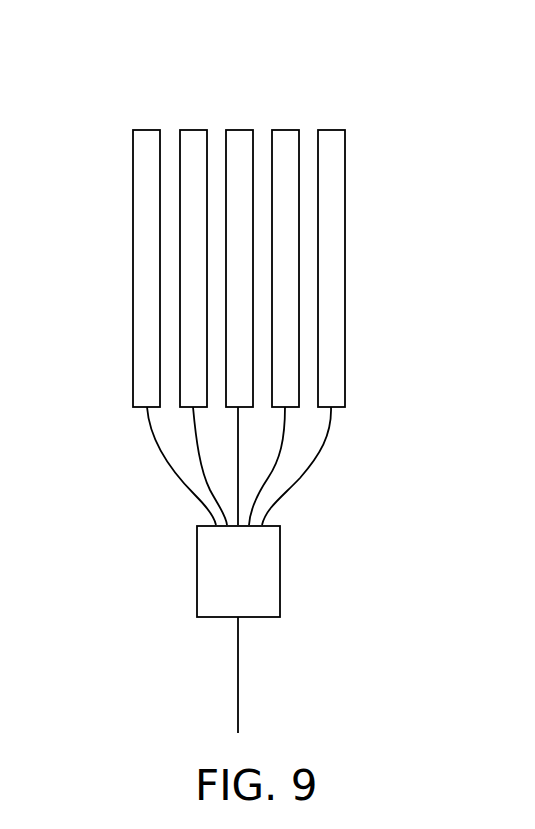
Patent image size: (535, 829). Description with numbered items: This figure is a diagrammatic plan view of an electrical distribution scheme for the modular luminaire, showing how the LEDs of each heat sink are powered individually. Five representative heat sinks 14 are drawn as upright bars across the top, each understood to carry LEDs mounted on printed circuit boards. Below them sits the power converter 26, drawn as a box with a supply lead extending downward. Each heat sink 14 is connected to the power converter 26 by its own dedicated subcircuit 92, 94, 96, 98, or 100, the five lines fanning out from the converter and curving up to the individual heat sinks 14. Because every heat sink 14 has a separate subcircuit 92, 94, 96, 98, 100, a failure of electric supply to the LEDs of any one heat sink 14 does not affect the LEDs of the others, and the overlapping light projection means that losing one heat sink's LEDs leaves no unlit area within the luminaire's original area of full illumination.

The heat sink 14 is at (142, 130).
The subcircuit 92 is at (150, 440).
The subcircuit 94 is at (195, 470).
The subcircuit 96 is at (280, 495).
The subcircuit 98 is at (280, 463).
The subcircuit 100 is at (238, 440).
The power converter 26 is at (280, 599).